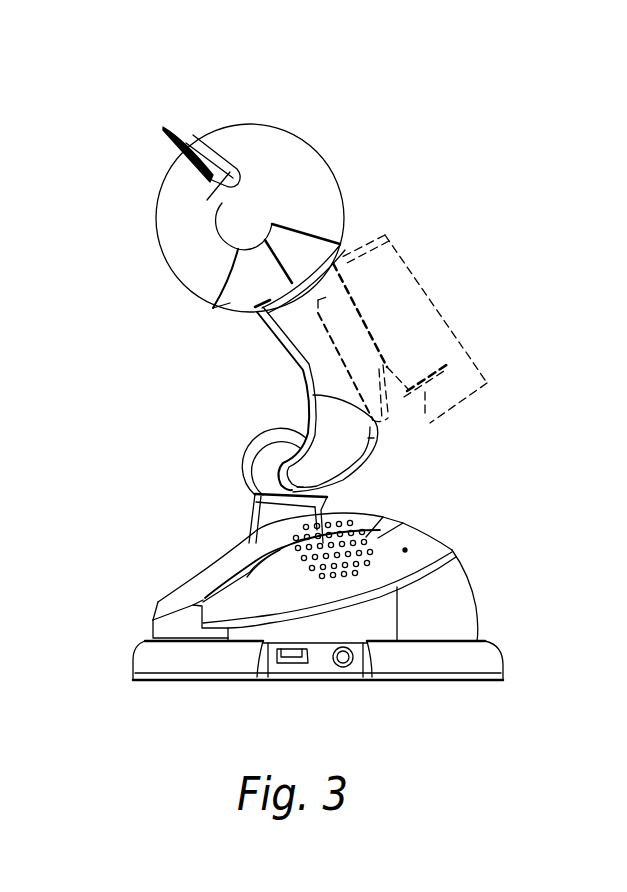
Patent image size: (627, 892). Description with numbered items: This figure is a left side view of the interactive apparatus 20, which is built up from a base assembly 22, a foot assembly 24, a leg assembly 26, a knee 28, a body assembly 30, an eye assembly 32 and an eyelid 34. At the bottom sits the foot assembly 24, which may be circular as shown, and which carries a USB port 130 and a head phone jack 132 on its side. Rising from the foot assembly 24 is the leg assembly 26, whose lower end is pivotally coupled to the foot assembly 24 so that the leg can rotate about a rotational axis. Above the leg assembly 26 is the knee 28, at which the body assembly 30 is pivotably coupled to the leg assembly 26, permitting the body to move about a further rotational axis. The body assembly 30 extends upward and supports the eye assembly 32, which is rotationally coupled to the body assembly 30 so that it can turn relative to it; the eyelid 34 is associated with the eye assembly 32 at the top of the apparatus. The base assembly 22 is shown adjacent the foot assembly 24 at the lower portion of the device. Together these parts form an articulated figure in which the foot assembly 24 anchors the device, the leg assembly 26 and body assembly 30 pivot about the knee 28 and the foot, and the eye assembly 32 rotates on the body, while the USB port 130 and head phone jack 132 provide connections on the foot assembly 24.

The interactive apparatus 20 is at (391, 89).
The base assembly 22 is at (462, 593).
The foot assembly 24 is at (490, 653).
The leg assembly 26 is at (247, 517).
The knee 28 is at (263, 440).
The body assembly 30 is at (300, 343).
The eye assembly 32 is at (173, 223).
The eyelid 34 is at (308, 177).
The USB port 130 is at (295, 665).
The head phone jack 132 is at (343, 668).